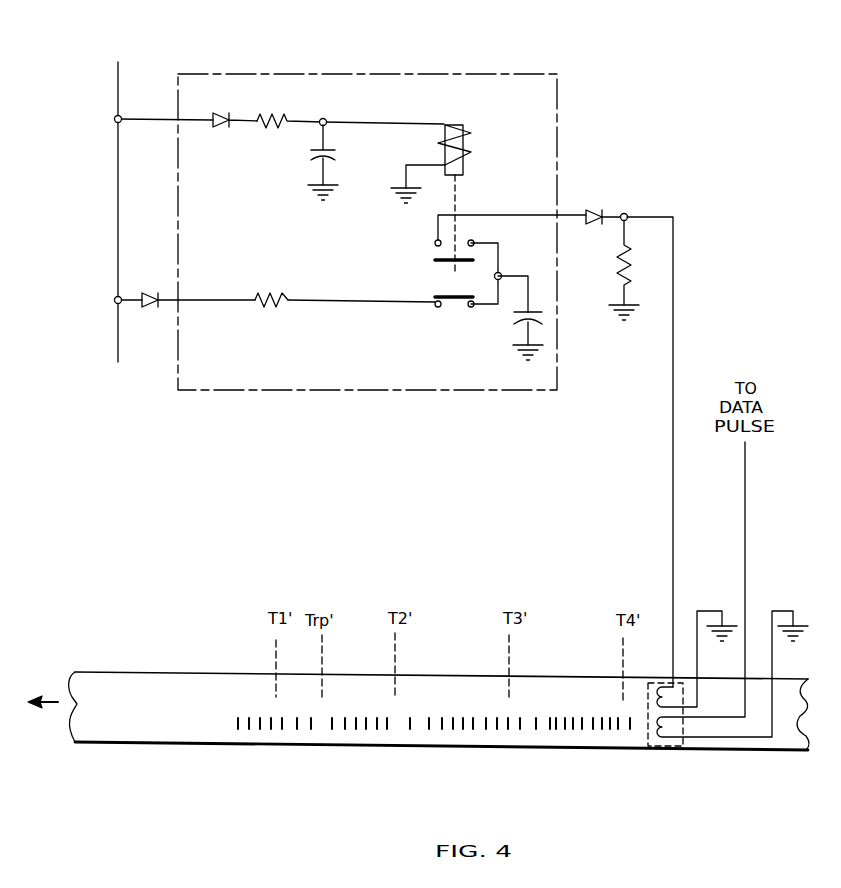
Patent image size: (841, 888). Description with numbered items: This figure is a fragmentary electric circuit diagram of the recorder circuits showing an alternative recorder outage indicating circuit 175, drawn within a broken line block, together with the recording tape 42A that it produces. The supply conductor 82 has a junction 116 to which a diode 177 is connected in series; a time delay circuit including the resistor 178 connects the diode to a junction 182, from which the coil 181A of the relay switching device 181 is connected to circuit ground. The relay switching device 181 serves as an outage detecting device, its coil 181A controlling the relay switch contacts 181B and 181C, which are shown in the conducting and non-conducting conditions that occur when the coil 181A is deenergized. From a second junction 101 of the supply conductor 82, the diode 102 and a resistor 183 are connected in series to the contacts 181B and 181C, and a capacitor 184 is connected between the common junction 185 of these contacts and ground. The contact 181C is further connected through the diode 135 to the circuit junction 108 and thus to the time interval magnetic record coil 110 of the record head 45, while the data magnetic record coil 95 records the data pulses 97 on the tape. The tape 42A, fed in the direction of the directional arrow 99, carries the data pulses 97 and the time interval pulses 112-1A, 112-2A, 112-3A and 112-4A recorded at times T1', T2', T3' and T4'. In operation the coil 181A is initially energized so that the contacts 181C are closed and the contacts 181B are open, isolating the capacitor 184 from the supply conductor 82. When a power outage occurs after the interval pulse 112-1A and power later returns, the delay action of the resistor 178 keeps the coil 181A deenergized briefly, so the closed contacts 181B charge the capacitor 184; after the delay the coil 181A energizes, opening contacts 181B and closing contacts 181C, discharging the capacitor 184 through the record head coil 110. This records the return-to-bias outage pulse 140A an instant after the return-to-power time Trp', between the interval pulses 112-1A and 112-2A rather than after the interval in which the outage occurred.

The supply conductor 82 is at (118, 62).
The junction 116 is at (118, 119).
The junction 101 is at (118, 300).
The recorder outage indicating circuit 175 is at (432, 74).
The diode 177 is at (216, 115).
The resistor 178 is at (263, 115).
The junction 182 is at (323, 118).
The relay switching device 181 is at (461, 184).
The coil 181A is at (466, 158).
The relay switch contact 181B is at (455, 308).
The relay switch contact 181C is at (434, 256).
The common junction 185 is at (502, 272).
The capacitor 184 is at (514, 318).
The diode 102 is at (148, 294).
The resistor 183 is at (268, 294).
The diode 135 is at (590, 210).
The circuit junction 108 is at (624, 213).
The recording tape 42A is at (302, 752).
The directional arrow 99 is at (58, 702).
The data pulses 97 is at (523, 723).
The time interval pulse 112-1A is at (275, 692).
The outage pulse 140A is at (324, 694).
The time interval pulse 112-2A is at (397, 695).
The time interval pulse 112-3A is at (507, 698).
The time interval pulse 112-4A is at (622, 700).
The head 45 is at (680, 748).
The time interval magnetic record coil 110 is at (666, 689).
The coil 95 is at (662, 737).